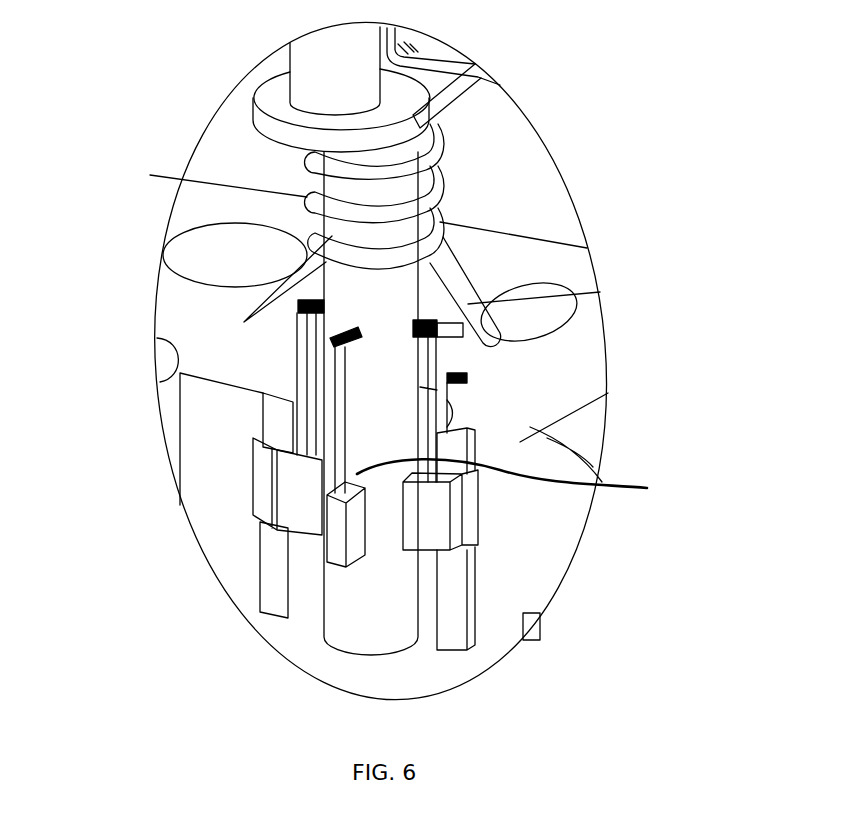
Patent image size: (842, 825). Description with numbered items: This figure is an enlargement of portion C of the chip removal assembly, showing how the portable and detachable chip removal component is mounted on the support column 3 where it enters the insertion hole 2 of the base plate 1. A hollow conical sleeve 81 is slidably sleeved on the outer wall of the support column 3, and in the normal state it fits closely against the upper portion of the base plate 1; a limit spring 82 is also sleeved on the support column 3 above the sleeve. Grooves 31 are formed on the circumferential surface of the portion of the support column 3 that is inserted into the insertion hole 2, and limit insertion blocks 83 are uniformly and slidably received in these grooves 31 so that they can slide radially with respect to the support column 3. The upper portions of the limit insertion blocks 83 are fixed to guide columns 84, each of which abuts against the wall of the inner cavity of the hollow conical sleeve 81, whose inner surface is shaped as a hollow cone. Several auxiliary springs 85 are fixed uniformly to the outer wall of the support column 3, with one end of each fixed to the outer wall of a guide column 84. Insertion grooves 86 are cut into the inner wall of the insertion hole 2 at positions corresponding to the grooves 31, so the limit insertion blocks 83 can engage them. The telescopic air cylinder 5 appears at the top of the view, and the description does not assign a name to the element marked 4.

The base plate 1 is at (202, 488).
The insertion hole 2 is at (190, 263).
The support column 3 is at (347, 240).
The flange plate 4 is at (283, 134).
The telescopic air cylinder 5 is at (317, 77).
The grooves 31 is at (529, 488).
The hollow conical sleeve 81 is at (458, 265).
The limit spring 82 is at (434, 193).
The limit insertion blocks 83 is at (418, 518).
The guide columns 84 is at (465, 381).
The auxiliary springs 85 is at (468, 278).
The insertion grooves 86 is at (475, 553).
The portion C is at (243, 612).